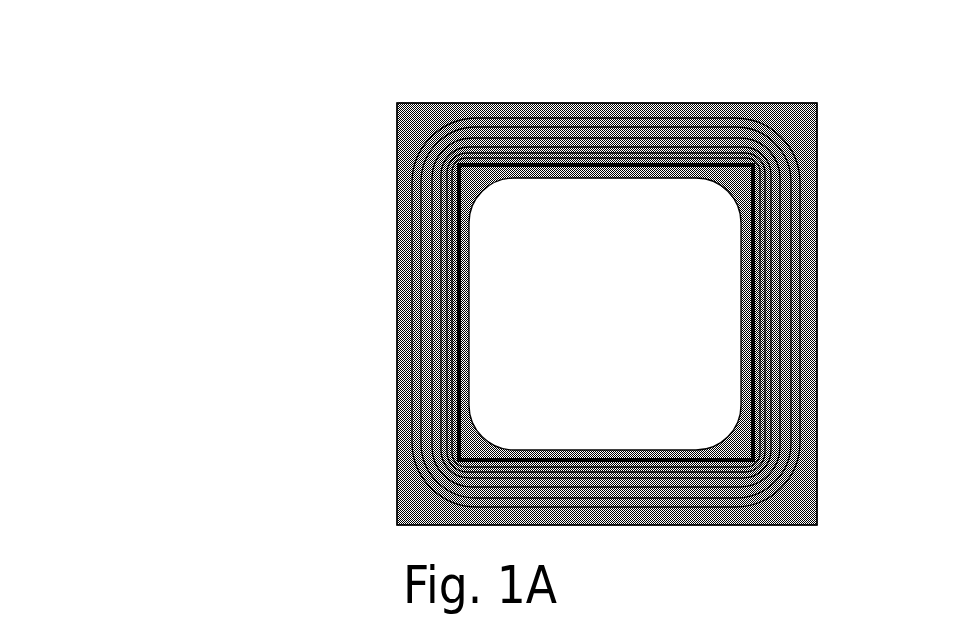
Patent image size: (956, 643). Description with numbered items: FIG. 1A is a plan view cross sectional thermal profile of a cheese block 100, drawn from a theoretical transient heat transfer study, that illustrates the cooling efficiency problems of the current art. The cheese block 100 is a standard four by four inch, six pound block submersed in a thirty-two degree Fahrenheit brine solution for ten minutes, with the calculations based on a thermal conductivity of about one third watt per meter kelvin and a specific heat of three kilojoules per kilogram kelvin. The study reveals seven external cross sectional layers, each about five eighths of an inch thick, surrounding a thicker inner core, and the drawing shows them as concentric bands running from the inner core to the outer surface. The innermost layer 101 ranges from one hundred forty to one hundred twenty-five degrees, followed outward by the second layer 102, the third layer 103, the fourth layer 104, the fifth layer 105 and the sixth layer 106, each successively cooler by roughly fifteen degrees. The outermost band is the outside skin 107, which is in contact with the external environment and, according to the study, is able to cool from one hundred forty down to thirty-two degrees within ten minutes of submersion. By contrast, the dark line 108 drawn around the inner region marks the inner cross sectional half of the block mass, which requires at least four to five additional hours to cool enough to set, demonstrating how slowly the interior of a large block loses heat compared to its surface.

The cheese block 100 is at (258, 74).
The inner core temperature layer 101 is at (498, 387).
The second temperature layer 102 is at (453, 340).
The third temperature layer 103 is at (440, 318).
The fourth temperature layer 104 is at (432, 268).
The fifth temperature layer 105 is at (397, 225).
The sixth temperature layer 106 is at (397, 200).
The outside skin 107 is at (397, 165).
The dark line 108 is at (508, 165).